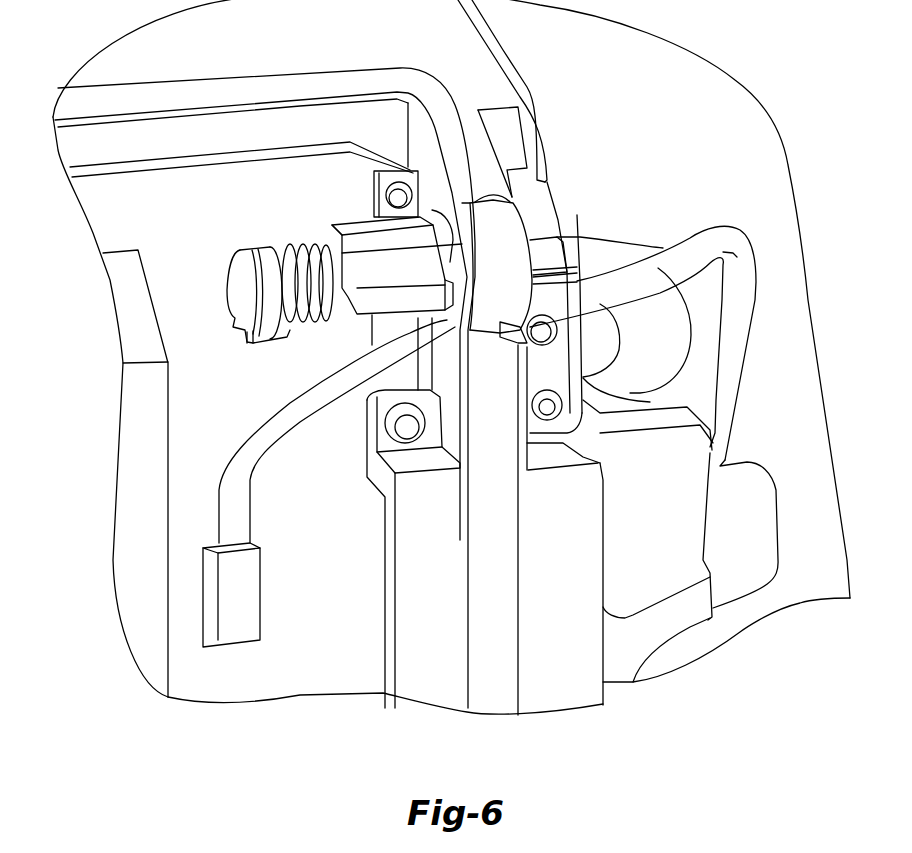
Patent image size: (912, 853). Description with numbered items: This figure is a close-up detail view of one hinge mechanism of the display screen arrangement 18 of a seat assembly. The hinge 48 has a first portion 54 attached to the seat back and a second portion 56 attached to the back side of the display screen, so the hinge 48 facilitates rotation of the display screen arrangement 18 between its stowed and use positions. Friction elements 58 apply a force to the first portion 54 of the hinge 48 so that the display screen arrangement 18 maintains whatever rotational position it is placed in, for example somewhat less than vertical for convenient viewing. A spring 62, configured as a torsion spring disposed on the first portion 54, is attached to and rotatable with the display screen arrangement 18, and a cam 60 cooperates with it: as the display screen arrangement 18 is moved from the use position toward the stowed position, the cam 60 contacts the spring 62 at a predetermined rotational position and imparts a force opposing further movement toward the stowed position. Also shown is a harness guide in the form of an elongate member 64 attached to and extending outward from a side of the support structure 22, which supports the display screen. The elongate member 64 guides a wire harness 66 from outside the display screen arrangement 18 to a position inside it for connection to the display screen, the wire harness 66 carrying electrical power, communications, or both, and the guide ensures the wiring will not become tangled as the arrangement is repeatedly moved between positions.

The display screen arrangement 18 is at (103, 80).
The support structure 22 is at (397, 77).
The hinge 48 is at (445, 258).
The first portion 54 is at (550, 367).
The second portion 56 is at (380, 183).
The friction elements 58 is at (366, 263).
The cam 60 is at (240, 280).
The spring 62 is at (283, 250).
The elongate member 64 is at (562, 281).
The wire harness 66 is at (727, 237).